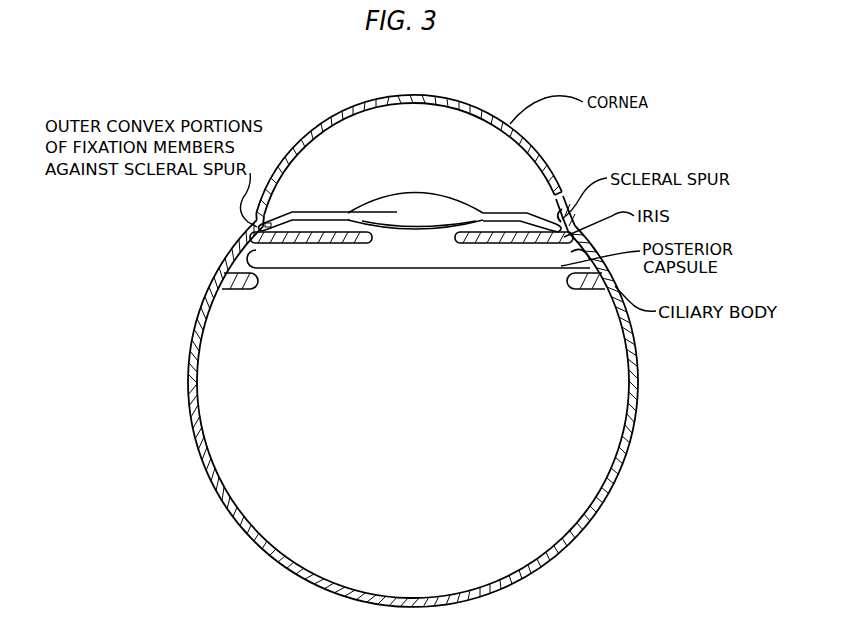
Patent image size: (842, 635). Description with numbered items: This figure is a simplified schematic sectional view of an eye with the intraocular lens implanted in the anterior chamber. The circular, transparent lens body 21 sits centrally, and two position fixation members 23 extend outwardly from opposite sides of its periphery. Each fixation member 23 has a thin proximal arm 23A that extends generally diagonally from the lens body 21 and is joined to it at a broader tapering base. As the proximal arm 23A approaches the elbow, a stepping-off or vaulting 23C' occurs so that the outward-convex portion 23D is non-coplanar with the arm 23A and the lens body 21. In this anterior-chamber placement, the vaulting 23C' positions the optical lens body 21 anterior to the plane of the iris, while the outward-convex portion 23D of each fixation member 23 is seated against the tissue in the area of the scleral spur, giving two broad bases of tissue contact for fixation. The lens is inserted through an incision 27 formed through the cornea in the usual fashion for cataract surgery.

The lens body 21 is at (451, 195).
The position fixation member 23 is at (310, 196).
The proximal arm 23A is at (507, 222).
The vaulting 23C' is at (519, 197).
The outward-convex portion 23D is at (552, 222).
The incision 27 is at (558, 189).